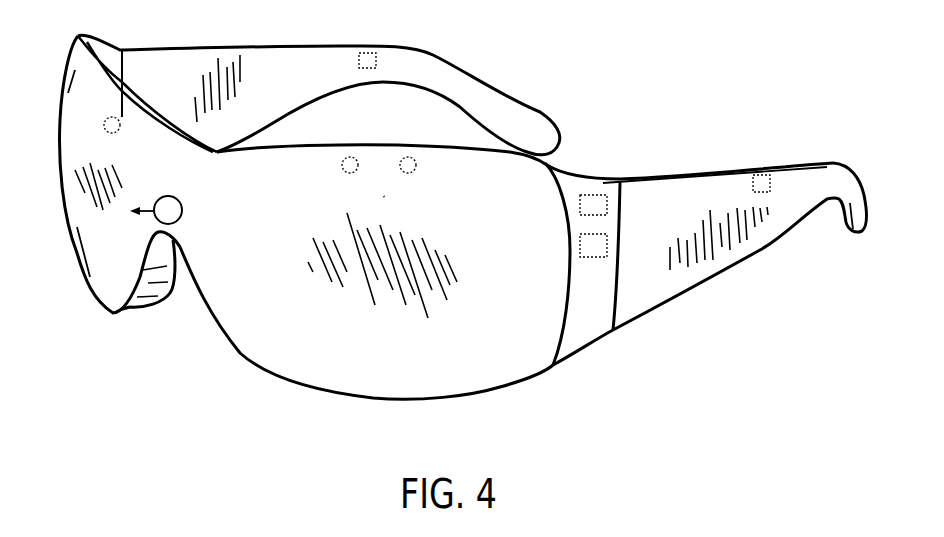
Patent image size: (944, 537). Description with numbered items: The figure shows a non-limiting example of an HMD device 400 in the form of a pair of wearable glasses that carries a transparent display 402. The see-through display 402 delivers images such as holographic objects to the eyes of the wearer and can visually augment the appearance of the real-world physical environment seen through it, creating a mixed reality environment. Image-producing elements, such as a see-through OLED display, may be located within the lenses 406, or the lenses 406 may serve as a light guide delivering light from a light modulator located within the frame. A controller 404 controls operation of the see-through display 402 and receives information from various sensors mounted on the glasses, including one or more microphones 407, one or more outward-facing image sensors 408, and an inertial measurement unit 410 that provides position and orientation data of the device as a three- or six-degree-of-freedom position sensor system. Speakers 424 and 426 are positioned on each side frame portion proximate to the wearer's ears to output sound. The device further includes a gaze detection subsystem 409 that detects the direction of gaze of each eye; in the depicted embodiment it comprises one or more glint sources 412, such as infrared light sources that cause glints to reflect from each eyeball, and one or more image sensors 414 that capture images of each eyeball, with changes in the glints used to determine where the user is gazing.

The HMD device 400 is at (503, 30).
The transparent display 402 is at (262, 336).
The controller 404 is at (592, 194).
The lenses 406 is at (147, 283).
The microphones 407 is at (112, 116).
The outward-facing image sensors 408 is at (183, 210).
The gaze detection subsystem 409 is at (385, 197).
The inertial measurement unit 410 is at (607, 246).
The glint sources 412 is at (350, 157).
The image sensors 414 is at (408, 157).
The speaker 424 is at (368, 53).
The speaker 426 is at (765, 175).